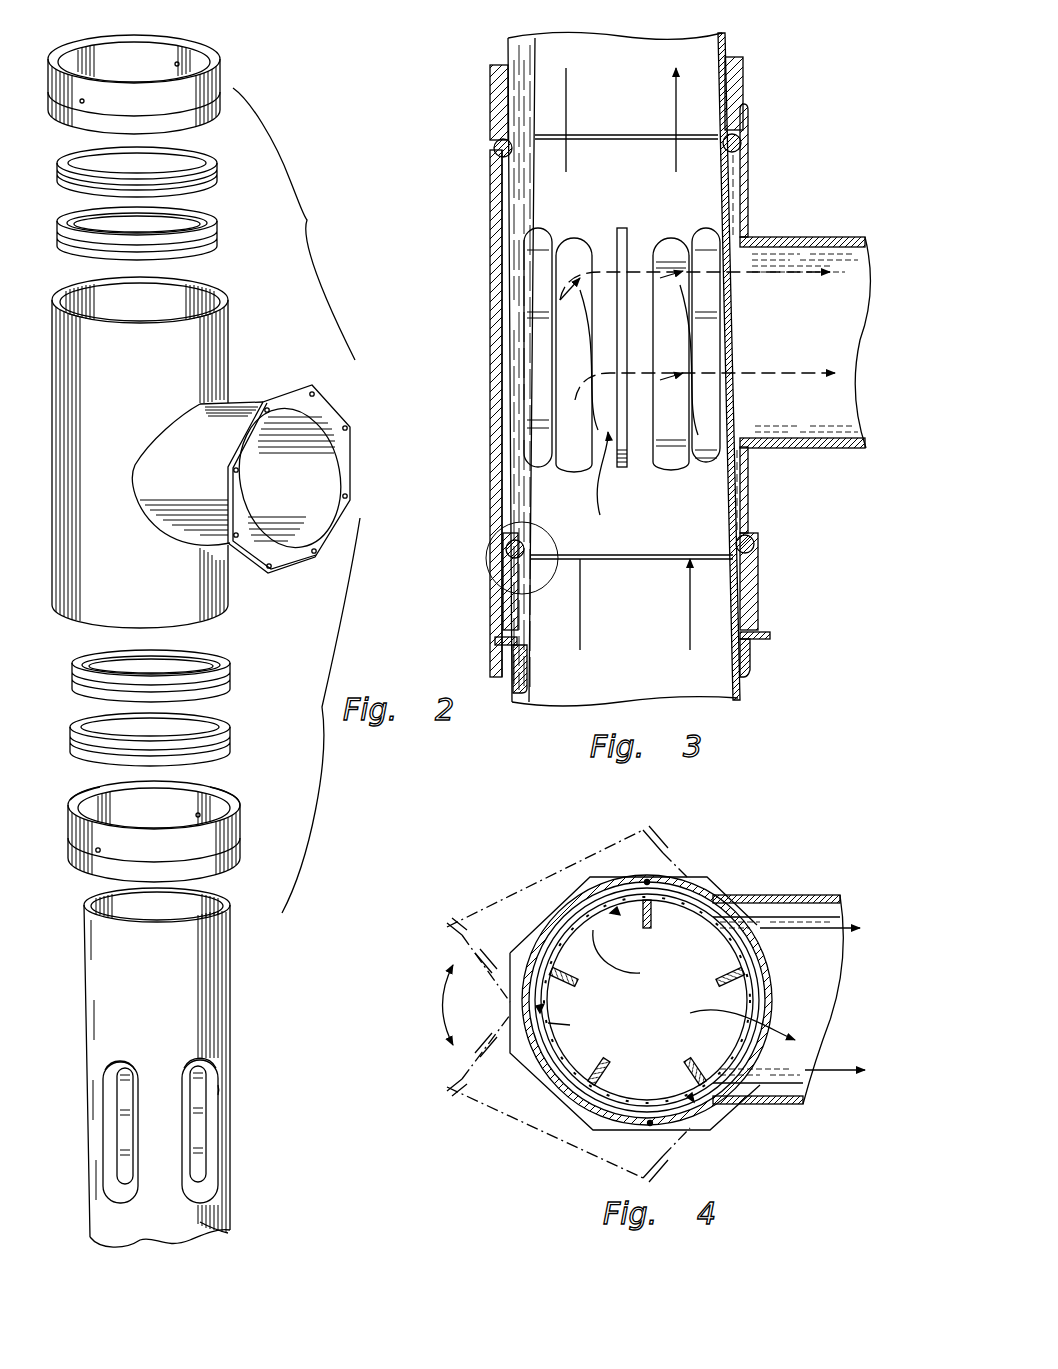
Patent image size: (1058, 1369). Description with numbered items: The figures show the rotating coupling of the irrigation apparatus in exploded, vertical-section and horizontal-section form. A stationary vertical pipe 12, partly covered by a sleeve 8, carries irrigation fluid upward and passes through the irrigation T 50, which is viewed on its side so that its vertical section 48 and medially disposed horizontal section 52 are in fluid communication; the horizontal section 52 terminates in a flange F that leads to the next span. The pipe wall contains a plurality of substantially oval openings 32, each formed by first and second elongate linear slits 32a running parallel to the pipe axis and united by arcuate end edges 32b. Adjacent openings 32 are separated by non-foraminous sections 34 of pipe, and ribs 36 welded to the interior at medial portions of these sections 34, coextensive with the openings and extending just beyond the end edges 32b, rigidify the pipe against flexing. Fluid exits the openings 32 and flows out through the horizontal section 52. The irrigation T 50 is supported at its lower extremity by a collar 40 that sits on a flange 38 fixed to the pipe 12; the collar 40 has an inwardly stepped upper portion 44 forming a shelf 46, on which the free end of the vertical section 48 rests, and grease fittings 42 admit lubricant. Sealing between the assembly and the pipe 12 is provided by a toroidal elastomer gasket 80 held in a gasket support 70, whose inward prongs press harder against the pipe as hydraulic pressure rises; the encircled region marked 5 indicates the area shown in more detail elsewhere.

In FIG. 3, the sleeve 8 is at (750, 657).
In FIG. 2, the vertical pipe 12 is at (178, 1072).
In FIG. 3, the vertical pipe 12 is at (624, 391).
In FIG. 4, the vertical pipe 12 is at (647, 1000).
In FIG. 3, the detail section 5 is at (498, 517).
In FIG. 2, the oval openings 32 is at (108, 1094).
In FIG. 3, the oval openings 32 is at (672, 247).
In FIG. 4, the oval openings 32 is at (677, 948).
In FIG. 2, the elongate linear slits 32a is at (222, 1091).
In FIG. 2, the arcuate end edges 32b is at (202, 1061).
In FIG. 3, the arcuate end edges 32b is at (575, 242).
In FIG. 2, the non-foraminous sections 34 is at (176, 1143).
In FIG. 3, the non-foraminous sections 34 is at (624, 486).
In FIG. 4, the non-foraminous sections 34 is at (551, 993).
In FIG. 3, the ribs 36 is at (538, 238).
In FIG. 4, the ribs 36 is at (648, 930).
In FIG. 3, the flange 38 is at (765, 632).
In FIG. 2, the collar 40 is at (212, 73).
In FIG. 3, the collar 40 is at (749, 600).
In FIG. 2, the grease fittings 42 is at (98, 853).
In FIG. 2, the upper portion 44 is at (76, 803).
In FIG. 2, the shelf 46 is at (238, 819).
In FIG. 2, the vertical section 48 is at (66, 412).
In FIG. 2, the irrigation T 50 is at (203, 452).
In FIG. 3, the irrigation T 50 is at (680, 375).
In FIG. 2, the horizontal section 52 is at (262, 470).
In FIG. 3, the horizontal section 52 is at (798, 237).
In FIG. 2, the gasket support 70 is at (60, 166).
In FIG. 2, the gasket 80 is at (60, 225).
In FIG. 2, the flange F is at (345, 450).